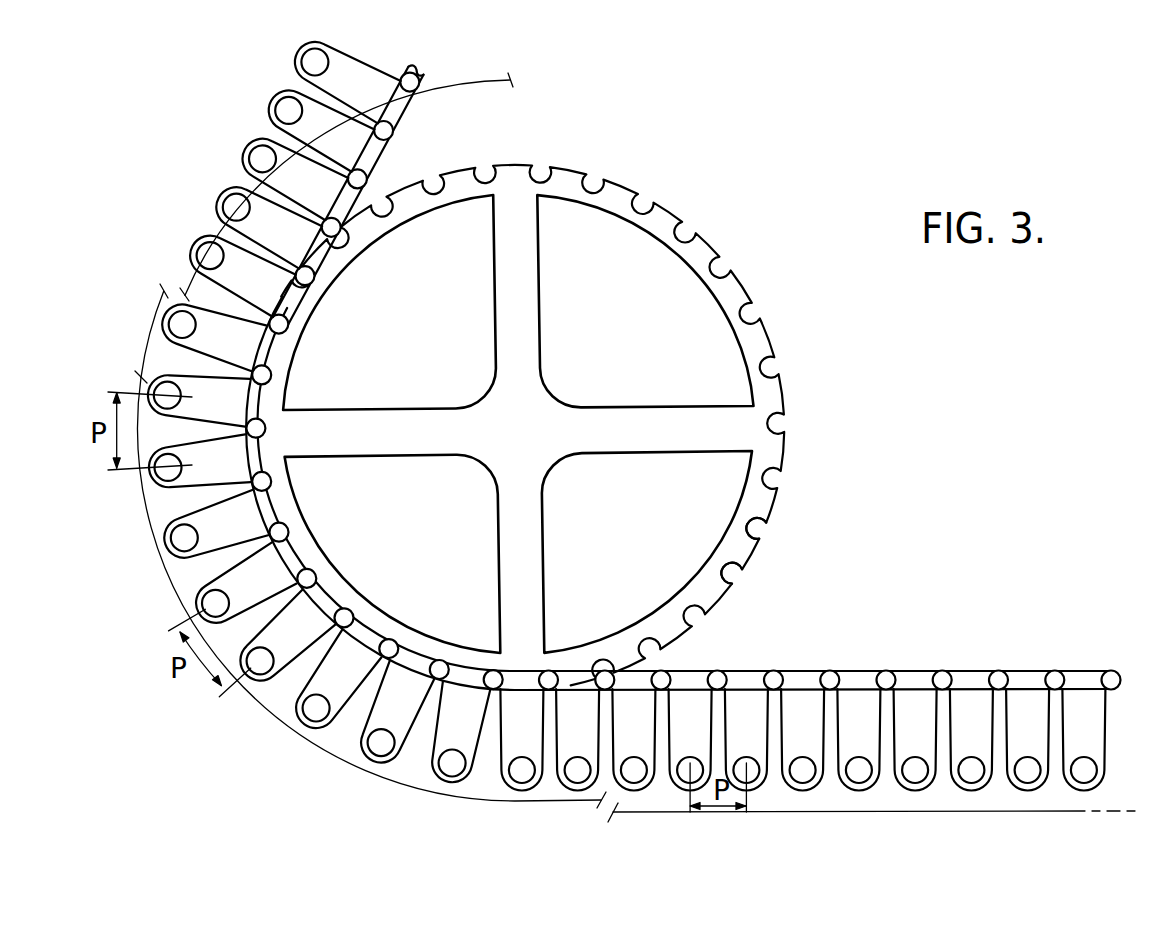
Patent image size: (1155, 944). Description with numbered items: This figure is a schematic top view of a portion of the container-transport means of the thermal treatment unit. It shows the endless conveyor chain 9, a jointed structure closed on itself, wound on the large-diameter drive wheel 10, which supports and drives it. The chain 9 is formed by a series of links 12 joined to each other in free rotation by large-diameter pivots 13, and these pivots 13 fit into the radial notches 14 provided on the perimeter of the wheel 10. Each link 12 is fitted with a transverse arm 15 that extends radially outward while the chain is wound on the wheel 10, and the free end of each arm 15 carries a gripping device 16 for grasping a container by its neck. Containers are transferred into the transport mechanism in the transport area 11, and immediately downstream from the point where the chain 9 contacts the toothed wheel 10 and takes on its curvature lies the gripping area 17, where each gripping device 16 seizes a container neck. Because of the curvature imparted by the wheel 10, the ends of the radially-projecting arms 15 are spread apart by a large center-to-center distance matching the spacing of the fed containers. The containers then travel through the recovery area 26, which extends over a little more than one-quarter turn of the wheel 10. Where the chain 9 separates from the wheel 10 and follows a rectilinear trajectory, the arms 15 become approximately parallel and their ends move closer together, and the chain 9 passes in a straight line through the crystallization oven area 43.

The endless conveyor chain 9 is at (382, 152).
The drive wheel 10 is at (668, 207).
The transport area 11 is at (477, 82).
The links 12 is at (1083, 675).
The pivots 13 is at (349, 611).
The radial notches 14 is at (763, 535).
The transverse arm 15 is at (983, 732).
The gripping device 16 is at (1028, 771).
The gripping area 17 is at (150, 332).
The recovery area 26 is at (338, 757).
The crystallization oven area 43 is at (806, 812).